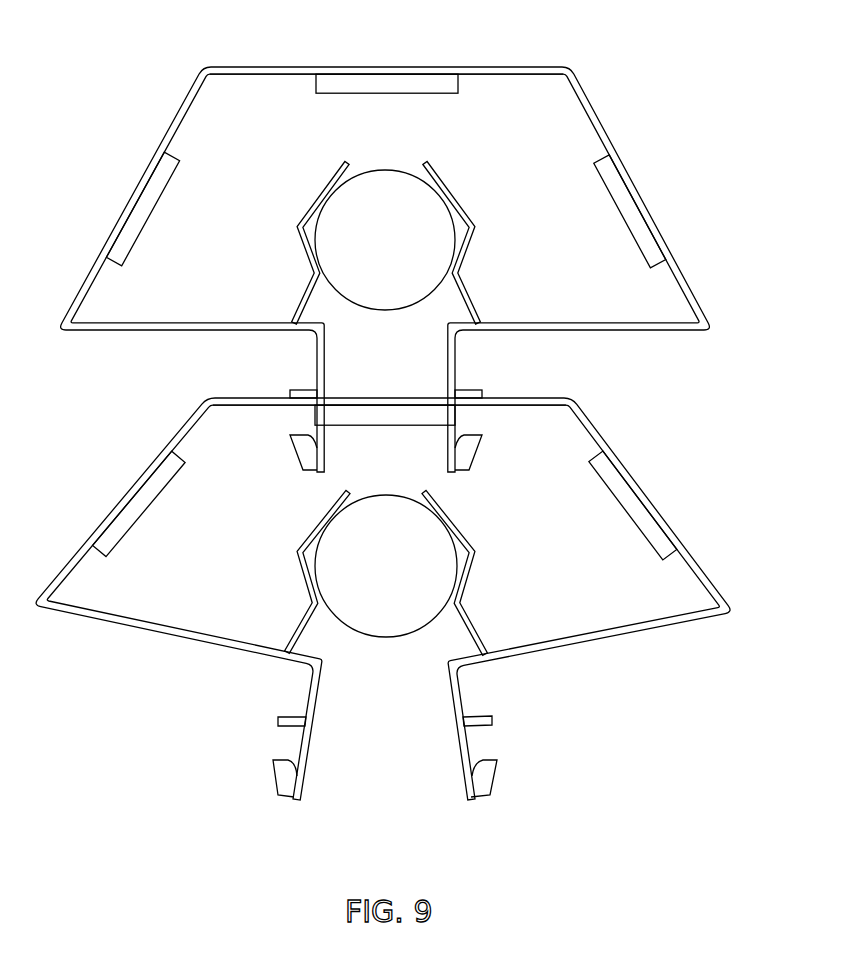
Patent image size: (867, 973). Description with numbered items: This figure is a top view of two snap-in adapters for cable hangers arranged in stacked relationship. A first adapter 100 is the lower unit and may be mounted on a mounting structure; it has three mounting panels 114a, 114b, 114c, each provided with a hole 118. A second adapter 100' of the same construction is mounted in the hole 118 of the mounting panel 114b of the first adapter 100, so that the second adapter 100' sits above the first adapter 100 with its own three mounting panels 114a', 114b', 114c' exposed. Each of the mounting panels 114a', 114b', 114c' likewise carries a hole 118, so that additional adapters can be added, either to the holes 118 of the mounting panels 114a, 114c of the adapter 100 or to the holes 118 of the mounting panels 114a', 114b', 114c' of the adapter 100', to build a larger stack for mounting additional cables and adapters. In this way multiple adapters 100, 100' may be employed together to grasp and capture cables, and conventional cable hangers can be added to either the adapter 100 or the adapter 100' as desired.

The snap-in adapter 100 is at (395, 599).
The second adapter 100' is at (434, 269).
The mounting panel 114a is at (126, 497).
The mounting panel 114b is at (389, 427).
The mounting panel 114c is at (681, 505).
The mounting panel 114a' is at (134, 176).
The mounting panel 114b' is at (403, 46).
The mounting panel 114c' is at (646, 177).
The hole 118 is at (397, 84).